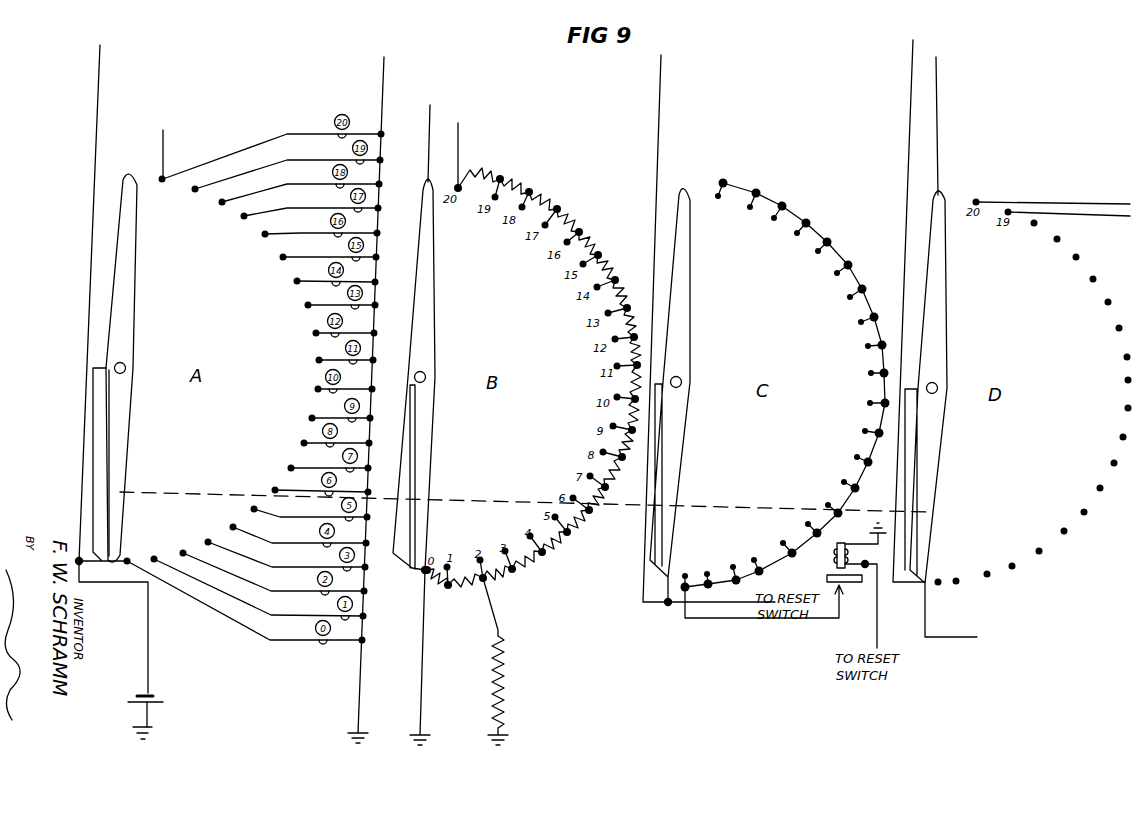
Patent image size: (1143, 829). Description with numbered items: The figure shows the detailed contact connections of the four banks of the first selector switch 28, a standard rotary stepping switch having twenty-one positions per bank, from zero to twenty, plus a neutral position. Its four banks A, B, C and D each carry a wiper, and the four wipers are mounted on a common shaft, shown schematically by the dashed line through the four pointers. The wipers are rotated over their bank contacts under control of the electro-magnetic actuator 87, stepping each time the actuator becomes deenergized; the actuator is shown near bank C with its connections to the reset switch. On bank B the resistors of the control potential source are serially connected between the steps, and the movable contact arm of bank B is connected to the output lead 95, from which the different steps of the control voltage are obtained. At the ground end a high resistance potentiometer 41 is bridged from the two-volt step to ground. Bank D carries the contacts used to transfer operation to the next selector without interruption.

The first selector switch 28 is at (60, 292).
The output lead 95 is at (410, 568).
The high resistance potentiometer 41 is at (532, 679).
The electro-magnetic actuator 87 is at (829, 553).